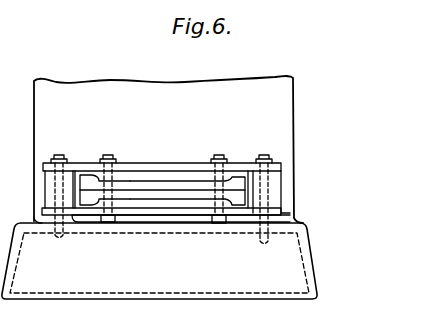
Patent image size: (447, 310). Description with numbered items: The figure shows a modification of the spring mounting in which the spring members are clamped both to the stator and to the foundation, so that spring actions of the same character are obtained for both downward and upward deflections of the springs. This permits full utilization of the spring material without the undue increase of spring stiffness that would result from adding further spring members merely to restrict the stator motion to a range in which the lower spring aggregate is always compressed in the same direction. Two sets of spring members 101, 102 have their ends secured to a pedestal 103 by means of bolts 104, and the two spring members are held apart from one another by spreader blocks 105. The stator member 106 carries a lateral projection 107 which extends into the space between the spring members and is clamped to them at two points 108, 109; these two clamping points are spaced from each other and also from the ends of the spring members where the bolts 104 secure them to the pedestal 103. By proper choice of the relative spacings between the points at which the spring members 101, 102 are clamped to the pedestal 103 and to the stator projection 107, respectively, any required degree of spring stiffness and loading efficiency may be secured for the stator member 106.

The spring member 101 is at (282, 167).
The spring member 102 is at (280, 212).
The pedestal 103 is at (313, 257).
The bolts 104 is at (58, 242).
The spreader blocks 105 is at (280, 185).
The stator member 106 is at (296, 103).
The lateral projection 107 is at (165, 165).
The clamping point 108 is at (123, 177).
The clamping point 109 is at (228, 181).